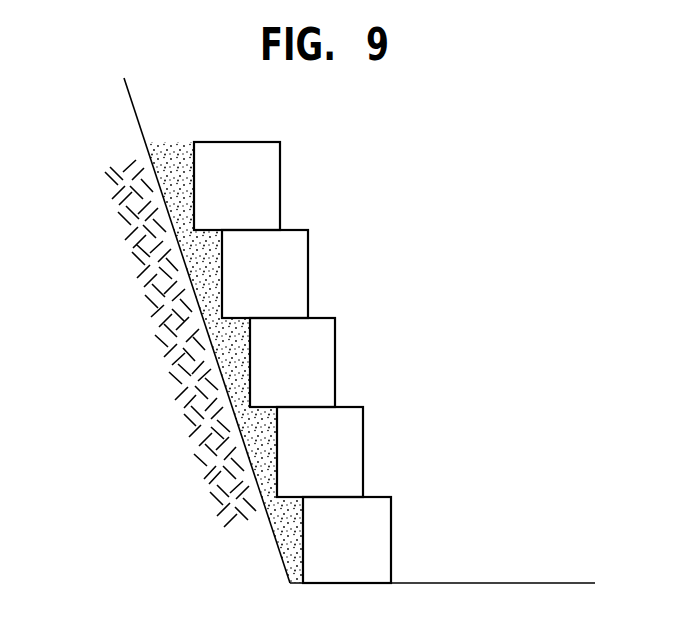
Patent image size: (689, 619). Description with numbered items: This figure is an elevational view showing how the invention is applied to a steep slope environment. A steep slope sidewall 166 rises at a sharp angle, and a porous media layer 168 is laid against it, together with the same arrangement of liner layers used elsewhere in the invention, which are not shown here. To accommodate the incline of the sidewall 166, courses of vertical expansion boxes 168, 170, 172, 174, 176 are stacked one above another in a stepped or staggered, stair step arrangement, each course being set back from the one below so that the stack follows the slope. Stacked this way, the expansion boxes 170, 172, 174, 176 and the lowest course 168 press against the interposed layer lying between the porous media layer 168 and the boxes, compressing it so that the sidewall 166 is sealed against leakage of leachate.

The steep slope sidewall 166 is at (135, 114).
The porous media layer 168 is at (380, 538).
The vertical expansion box 170 is at (353, 450).
The vertical expansion box 172 is at (325, 361).
The vertical expansion box 174 is at (298, 272).
The vertical expansion box 176 is at (271, 184).